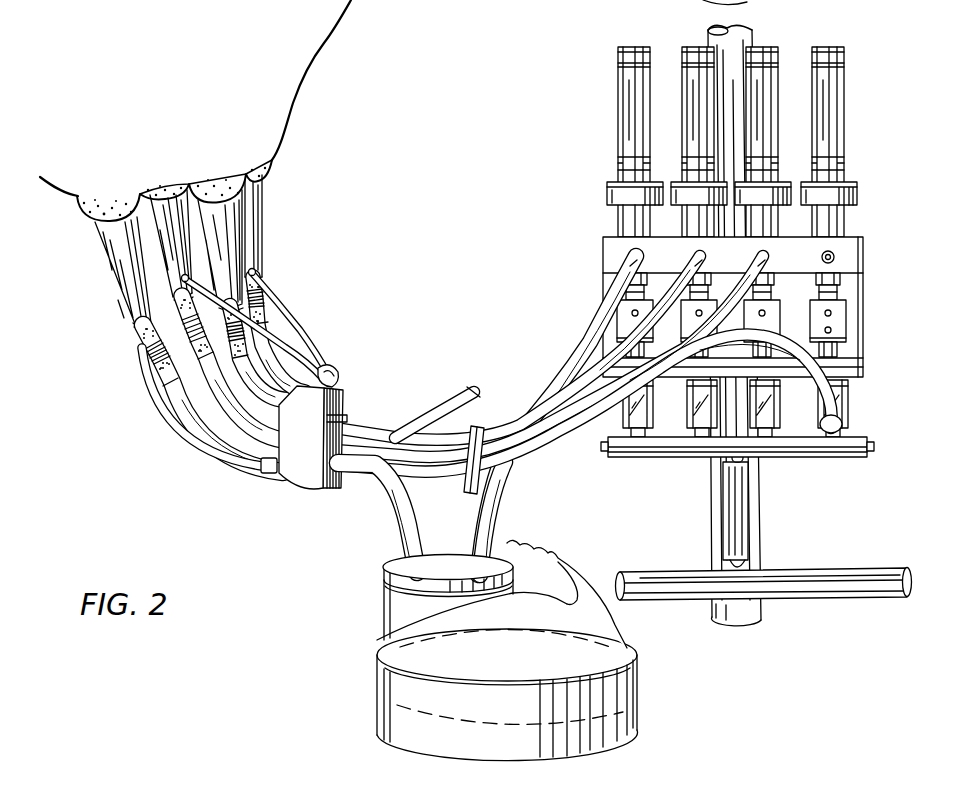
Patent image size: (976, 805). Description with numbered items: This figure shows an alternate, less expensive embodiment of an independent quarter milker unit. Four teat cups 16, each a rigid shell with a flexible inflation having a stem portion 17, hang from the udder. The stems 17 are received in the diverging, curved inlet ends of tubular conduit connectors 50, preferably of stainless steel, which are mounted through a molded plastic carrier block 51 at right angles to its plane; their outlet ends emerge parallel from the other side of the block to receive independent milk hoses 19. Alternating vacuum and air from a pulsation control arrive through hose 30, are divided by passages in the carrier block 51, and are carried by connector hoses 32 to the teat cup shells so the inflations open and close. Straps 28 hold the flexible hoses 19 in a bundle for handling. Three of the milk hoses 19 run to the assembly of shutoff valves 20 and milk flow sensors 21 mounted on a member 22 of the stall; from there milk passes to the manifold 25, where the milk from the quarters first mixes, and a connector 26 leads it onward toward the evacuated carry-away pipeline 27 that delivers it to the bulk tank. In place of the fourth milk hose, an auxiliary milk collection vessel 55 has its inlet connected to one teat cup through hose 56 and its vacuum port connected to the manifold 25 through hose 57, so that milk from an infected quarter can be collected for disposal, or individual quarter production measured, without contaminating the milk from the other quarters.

The teat cups 16 is at (227, 242).
The stem portion 17 is at (147, 343).
The milk conduits 19 is at (528, 410).
The shutoff valves 20 is at (571, 214).
The milk flow sensors 21 is at (553, 334).
The member of the stall 22 is at (753, 30).
The manifold 25 is at (815, 444).
The connector 26 is at (735, 517).
The pipeline 27 is at (848, 578).
The straps 28 is at (468, 492).
The hose 30 is at (461, 389).
The connector hoses 32 is at (225, 327).
The tubular conduit connectors 50 is at (202, 389).
The carrier block 51 is at (343, 390).
The auxiliary milk collection vessel 55 is at (385, 670).
The hose 56 is at (403, 508).
The hose 57 is at (496, 504).